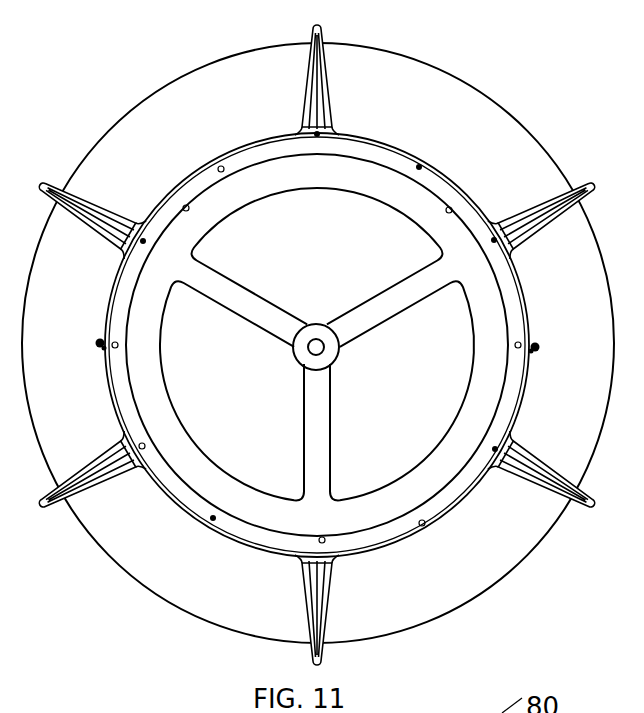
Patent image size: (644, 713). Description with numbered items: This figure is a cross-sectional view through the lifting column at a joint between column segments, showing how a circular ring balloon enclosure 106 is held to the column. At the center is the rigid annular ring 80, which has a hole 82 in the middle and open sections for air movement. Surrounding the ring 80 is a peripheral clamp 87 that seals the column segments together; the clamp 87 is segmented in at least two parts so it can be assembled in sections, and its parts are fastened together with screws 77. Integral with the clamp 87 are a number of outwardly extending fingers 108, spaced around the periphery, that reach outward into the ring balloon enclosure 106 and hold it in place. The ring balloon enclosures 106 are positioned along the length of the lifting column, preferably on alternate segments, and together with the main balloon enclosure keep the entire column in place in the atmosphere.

The screws 77 is at (100, 340).
The rigid annular ring 80 is at (430, 200).
The hole 82 is at (310, 352).
The peripheral clamp 87 is at (407, 150).
The ring balloon enclosure 106 is at (445, 589).
The fingers 108 is at (323, 80).